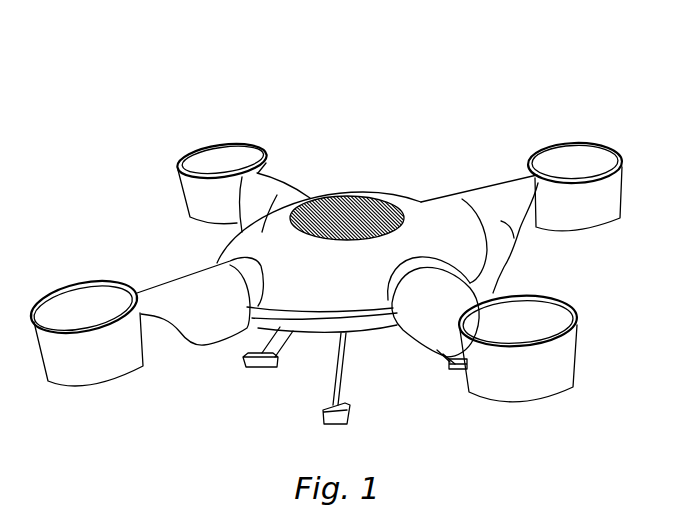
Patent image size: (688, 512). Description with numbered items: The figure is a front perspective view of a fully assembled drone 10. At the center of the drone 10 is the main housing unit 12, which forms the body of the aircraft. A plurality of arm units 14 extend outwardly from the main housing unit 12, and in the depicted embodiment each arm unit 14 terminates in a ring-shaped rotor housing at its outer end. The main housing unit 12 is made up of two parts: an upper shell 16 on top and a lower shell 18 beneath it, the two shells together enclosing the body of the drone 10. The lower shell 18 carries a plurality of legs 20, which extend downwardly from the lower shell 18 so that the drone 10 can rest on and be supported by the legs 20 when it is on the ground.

The drone 10 is at (210, 70).
The main housing unit 12 is at (516, 255).
The arm units 14 is at (584, 122).
The upper shell 16 is at (370, 176).
The lower shell 18 is at (385, 343).
The legs 20 is at (238, 371).